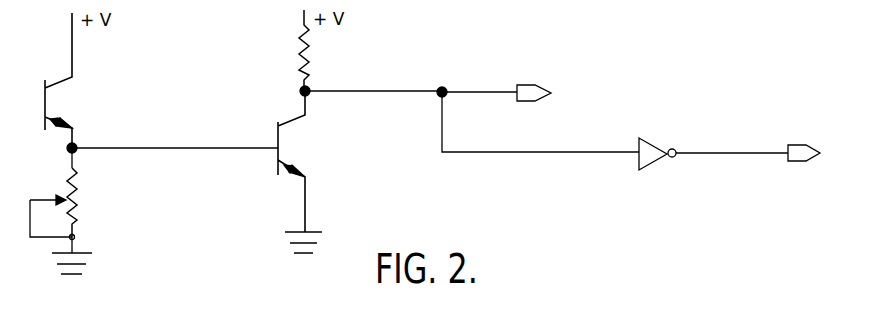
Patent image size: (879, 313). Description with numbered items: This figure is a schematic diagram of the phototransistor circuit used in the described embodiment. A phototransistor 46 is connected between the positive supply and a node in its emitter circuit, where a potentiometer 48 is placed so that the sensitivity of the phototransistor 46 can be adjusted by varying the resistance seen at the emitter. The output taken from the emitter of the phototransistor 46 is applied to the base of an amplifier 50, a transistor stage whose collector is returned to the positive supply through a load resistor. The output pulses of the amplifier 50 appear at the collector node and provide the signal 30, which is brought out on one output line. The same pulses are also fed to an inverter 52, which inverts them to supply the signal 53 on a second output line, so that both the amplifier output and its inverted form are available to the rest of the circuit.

The phototransistor 46 is at (48, 99).
The potentiometer 48 is at (76, 224).
The amplifier 50 is at (283, 140).
The signal 30 is at (459, 91).
The inverter 52 is at (652, 144).
The signal 53 is at (727, 152).